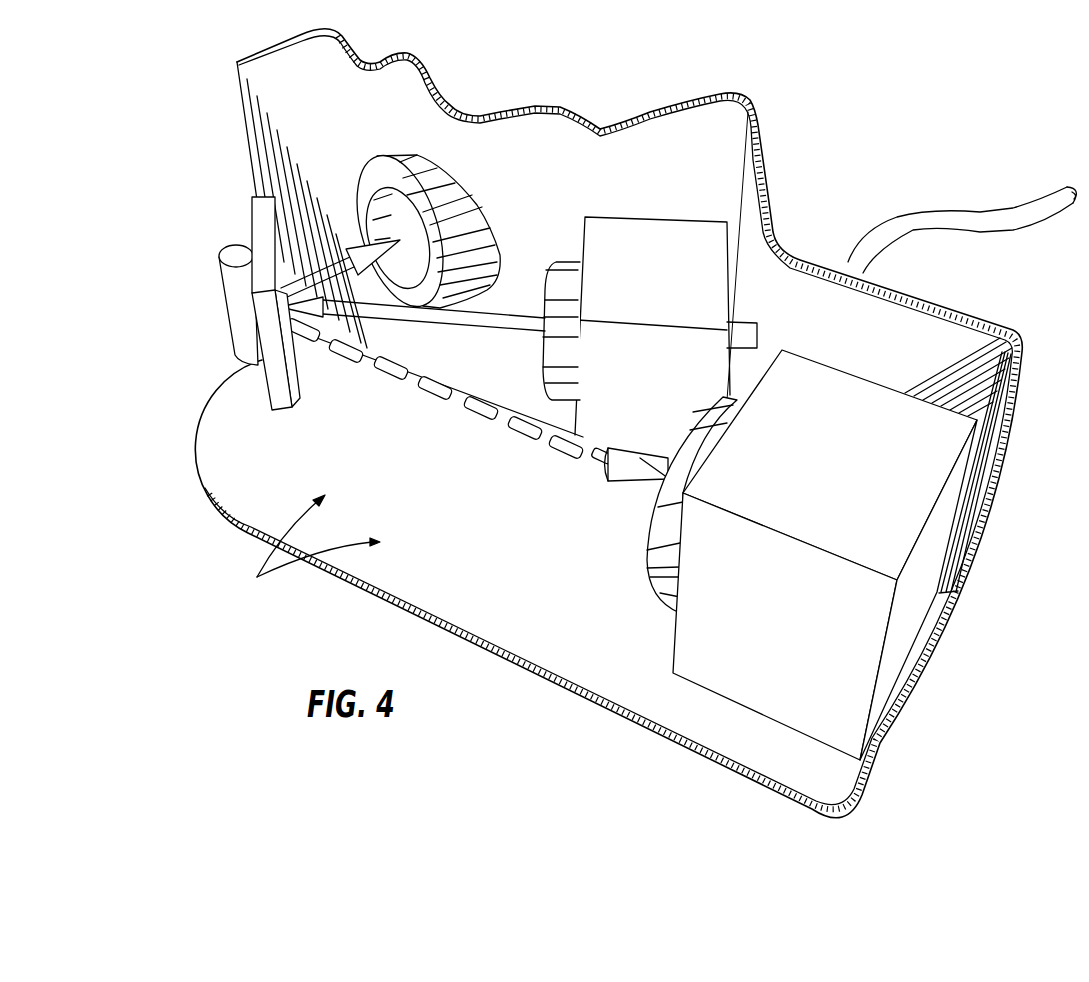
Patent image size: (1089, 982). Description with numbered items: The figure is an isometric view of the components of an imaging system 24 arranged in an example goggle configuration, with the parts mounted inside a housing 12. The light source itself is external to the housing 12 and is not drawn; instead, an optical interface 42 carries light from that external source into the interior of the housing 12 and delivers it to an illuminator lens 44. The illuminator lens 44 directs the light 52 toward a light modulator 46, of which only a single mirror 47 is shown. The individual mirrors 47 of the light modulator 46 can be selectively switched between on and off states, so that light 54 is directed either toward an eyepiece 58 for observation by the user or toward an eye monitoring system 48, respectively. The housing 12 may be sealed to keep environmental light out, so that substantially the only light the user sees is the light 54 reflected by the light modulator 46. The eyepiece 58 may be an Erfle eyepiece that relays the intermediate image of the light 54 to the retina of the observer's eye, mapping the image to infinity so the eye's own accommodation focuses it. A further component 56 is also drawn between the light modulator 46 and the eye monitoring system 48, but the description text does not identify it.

The housing 12 is at (780, 163).
The imaging system 24 is at (302, 547).
The optical interface 42 is at (975, 220).
The illuminator lens 44 is at (633, 217).
The light modulator 46 is at (221, 234).
The mirror 47 is at (267, 315).
The eye monitoring system 48 is at (700, 693).
The light 52 is at (518, 323).
The light 54 is at (342, 252).
The chain 56 is at (477, 407).
The eyepiece 58 is at (443, 193).